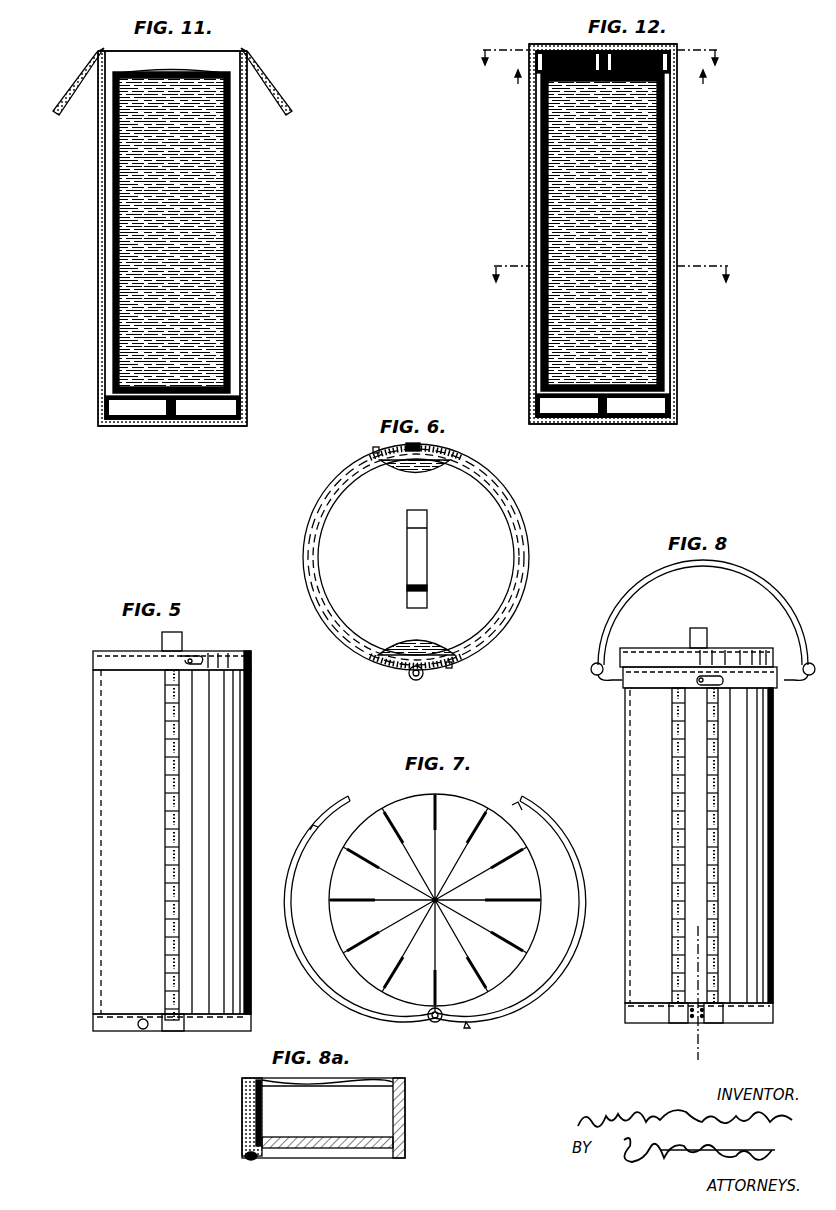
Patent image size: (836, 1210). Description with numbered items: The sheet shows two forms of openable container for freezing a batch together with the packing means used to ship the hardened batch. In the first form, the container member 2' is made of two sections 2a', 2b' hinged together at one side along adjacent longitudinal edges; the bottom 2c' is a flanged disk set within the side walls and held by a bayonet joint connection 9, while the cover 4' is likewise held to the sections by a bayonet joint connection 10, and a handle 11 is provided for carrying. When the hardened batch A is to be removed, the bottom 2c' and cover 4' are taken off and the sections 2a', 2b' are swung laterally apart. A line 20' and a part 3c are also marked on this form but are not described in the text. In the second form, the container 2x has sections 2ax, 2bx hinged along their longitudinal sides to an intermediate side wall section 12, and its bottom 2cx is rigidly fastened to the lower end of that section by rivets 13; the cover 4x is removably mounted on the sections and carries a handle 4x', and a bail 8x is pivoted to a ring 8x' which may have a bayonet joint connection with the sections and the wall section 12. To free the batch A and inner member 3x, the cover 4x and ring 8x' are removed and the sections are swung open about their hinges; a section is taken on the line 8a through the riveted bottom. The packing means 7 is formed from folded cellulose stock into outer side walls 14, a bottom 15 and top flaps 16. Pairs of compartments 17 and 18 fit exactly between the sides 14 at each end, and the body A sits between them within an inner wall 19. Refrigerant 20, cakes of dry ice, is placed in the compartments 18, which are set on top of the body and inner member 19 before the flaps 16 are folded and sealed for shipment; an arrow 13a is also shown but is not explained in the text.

In FIG. 11, the packing means 7 is at (187, 238).
In FIG. 11, the top flaps 16 is at (80, 77).
In FIG. 12, the top flaps 16 is at (560, 45).
In FIG. 11, the inner wall 19 is at (230, 231).
In FIG. 12, the inner wall 19 is at (667, 194).
In FIG. 11, the bottom 15 is at (204, 418).
In FIG. 12, the bottom 15 is at (647, 418).
In FIG. 11, the compartments 17 is at (140, 412).
In FIG. 12, the compartments 17 is at (621, 417).
In FIG. 12, the outer side walls 14 is at (679, 323).
In FIG. 12, the rivets 13 is at (610, 63).
In FIG. 8, the rivets 13 is at (690, 1023).
In FIG. 8A, the rivets 13 is at (268, 1162).
In FIG. 12, the pin arrow 13a is at (616, 86).
In FIG. 12, the compartments 18 is at (533, 63).
In FIG. 12, the refrigerant 20 is at (602, 95).
In FIG. 6, the cover 4' is at (431, 561).
In FIG. 5, the cover 4' is at (172, 645).
In FIG. 6, the handle 11 is at (427, 566).
In FIG. 5, the handle 11 is at (162, 638).
In FIG. 5, the container member 2' is at (160, 842).
In FIG. 5, the casing wall 20' is at (84, 842).
In FIG. 5, the section 2b' is at (225, 845).
In FIG. 7, the section 2b' is at (507, 918).
In FIG. 5, the bayonet joint connection 10 is at (196, 656).
In FIG. 5, the bottom 2c' is at (172, 1045).
In FIG. 5, the bayonet joint connection 9 is at (146, 1031).
In FIG. 7, the partition disc 3c is at (463, 813).
In FIG. 7, the inner member 3x is at (447, 900).
In FIG. 7, the hardened batch A is at (505, 966).
In FIG. 7, the section 2a' is at (358, 911).
In FIG. 8, the bail 8x is at (704, 620).
In FIG. 8, the cover 4x is at (698, 653).
In FIG. 8, the handle 4x' is at (706, 623).
In FIG. 8, the ring 8x' is at (757, 691).
In FIG. 8, the container 2x is at (720, 845).
In FIG. 8, the section 2ax is at (636, 785).
In FIG. 8, the section 2bx is at (762, 960).
In FIG. 8, the intermediate side wall section 12 is at (703, 848).
In FIG. 8A, the intermediate side wall section 12 is at (262, 1118).
In FIG. 8, the bottom 2cx is at (699, 1013).
In FIG. 8A, the bottom 2cx is at (337, 1148).
In FIG. 8, the section line 8a is at (697, 994).